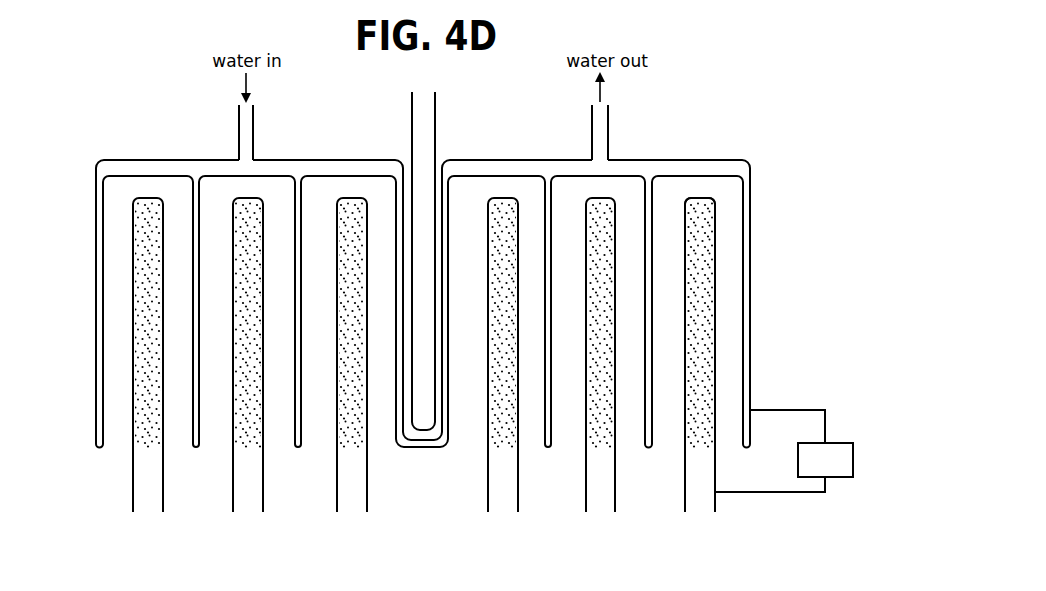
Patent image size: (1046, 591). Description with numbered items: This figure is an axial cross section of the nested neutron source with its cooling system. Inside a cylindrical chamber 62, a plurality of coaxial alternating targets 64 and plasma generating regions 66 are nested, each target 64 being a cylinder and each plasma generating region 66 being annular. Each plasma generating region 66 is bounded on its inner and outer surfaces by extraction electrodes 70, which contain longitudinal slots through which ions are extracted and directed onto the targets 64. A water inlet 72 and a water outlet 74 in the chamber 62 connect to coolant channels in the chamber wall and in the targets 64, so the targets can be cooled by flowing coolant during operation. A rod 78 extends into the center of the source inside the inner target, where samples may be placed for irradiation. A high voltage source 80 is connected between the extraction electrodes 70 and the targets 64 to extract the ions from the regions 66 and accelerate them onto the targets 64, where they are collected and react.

The cylindrical chamber 62 is at (302, 158).
The targets 64 is at (450, 223).
The plasma generating regions 66 is at (505, 295).
The extraction electrodes 70 is at (685, 405).
The water inlet 72 is at (238, 127).
The water outlet 74 is at (609, 133).
The rod 78 is at (437, 140).
The high voltage source 80 is at (797, 455).